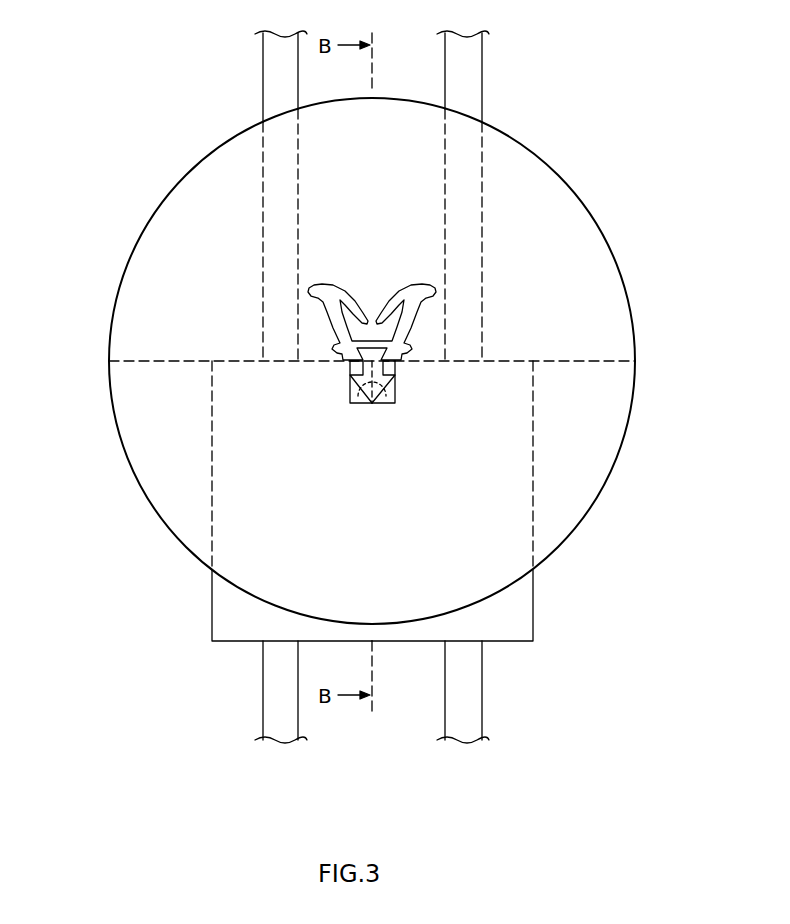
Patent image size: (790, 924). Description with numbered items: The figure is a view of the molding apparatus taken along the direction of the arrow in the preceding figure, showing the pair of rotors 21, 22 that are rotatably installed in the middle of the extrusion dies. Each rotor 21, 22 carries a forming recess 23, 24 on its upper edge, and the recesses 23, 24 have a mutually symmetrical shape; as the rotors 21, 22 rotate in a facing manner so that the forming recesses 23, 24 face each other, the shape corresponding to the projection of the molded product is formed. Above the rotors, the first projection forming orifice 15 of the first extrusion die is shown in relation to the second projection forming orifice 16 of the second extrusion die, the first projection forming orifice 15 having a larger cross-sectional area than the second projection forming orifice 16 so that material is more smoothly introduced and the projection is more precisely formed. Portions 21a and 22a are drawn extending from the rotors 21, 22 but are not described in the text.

The first projection forming orifice 15 is at (350, 380).
The second projection forming orifice 16 is at (395, 381).
The rotor 21 is at (225, 610).
The first frame flange 21a is at (273, 70).
The rotor 22 is at (520, 612).
The second frame flange 22a is at (478, 70).
The forming recess 23 is at (350, 388).
The forming recess 24 is at (395, 405).